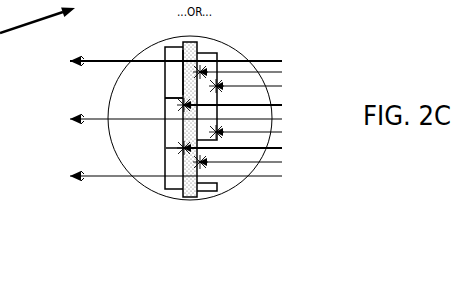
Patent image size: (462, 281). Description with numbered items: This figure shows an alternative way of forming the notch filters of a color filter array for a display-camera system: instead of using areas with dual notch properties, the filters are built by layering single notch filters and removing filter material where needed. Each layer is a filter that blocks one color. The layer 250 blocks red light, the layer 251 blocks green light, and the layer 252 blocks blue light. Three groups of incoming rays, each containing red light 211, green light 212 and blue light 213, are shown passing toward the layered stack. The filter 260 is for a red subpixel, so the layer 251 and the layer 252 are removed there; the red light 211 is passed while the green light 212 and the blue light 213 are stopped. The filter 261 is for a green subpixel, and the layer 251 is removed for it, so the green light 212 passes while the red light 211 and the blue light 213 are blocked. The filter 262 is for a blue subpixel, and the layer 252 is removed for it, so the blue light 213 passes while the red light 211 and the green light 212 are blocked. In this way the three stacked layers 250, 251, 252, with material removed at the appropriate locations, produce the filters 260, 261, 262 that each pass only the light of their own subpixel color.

The red light 211 is at (282, 61).
The green light 212 is at (282, 72).
The blue light 213 is at (282, 86).
The layer 250 is at (170, 183).
The layer 251 is at (192, 199).
The layer 252 is at (213, 187).
The filter 260 is at (183, 69).
The filter 261 is at (171, 99).
The filter 262 is at (172, 149).